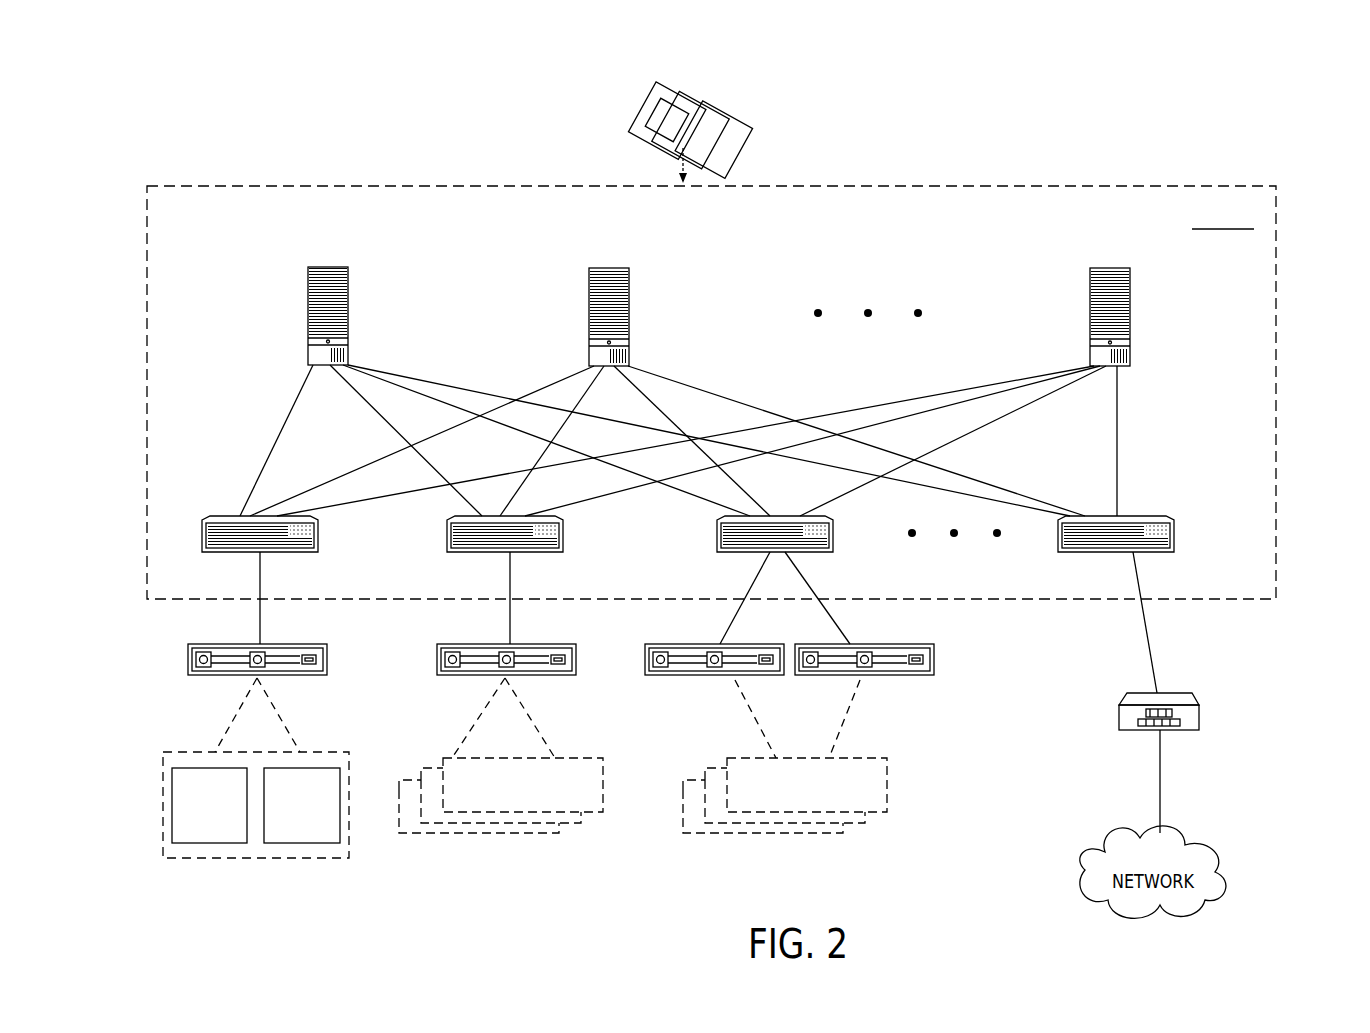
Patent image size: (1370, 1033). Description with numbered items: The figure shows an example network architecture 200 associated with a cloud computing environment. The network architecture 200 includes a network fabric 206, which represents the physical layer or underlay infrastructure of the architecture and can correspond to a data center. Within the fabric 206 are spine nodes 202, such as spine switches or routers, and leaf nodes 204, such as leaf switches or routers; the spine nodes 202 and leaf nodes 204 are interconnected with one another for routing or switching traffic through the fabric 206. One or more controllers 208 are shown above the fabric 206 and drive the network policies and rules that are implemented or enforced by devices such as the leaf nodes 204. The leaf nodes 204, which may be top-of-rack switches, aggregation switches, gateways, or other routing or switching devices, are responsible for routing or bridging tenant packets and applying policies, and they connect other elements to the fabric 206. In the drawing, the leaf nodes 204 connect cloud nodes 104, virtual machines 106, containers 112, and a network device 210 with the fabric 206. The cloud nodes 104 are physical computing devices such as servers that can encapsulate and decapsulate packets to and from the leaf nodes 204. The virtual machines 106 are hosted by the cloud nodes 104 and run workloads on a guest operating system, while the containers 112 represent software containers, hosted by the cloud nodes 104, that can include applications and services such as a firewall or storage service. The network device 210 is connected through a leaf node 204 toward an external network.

The network architecture 200 is at (1172, 118).
The spine nodes 202 is at (308, 308).
The leaf nodes 204 is at (319, 540).
The network fabric 206 is at (1272, 192).
The controllers 208 is at (641, 110).
The network device 210 is at (1119, 712).
The cloud nodes 104 is at (188, 658).
The virtual machines 106 is at (172, 805).
The containers 112 is at (605, 786).